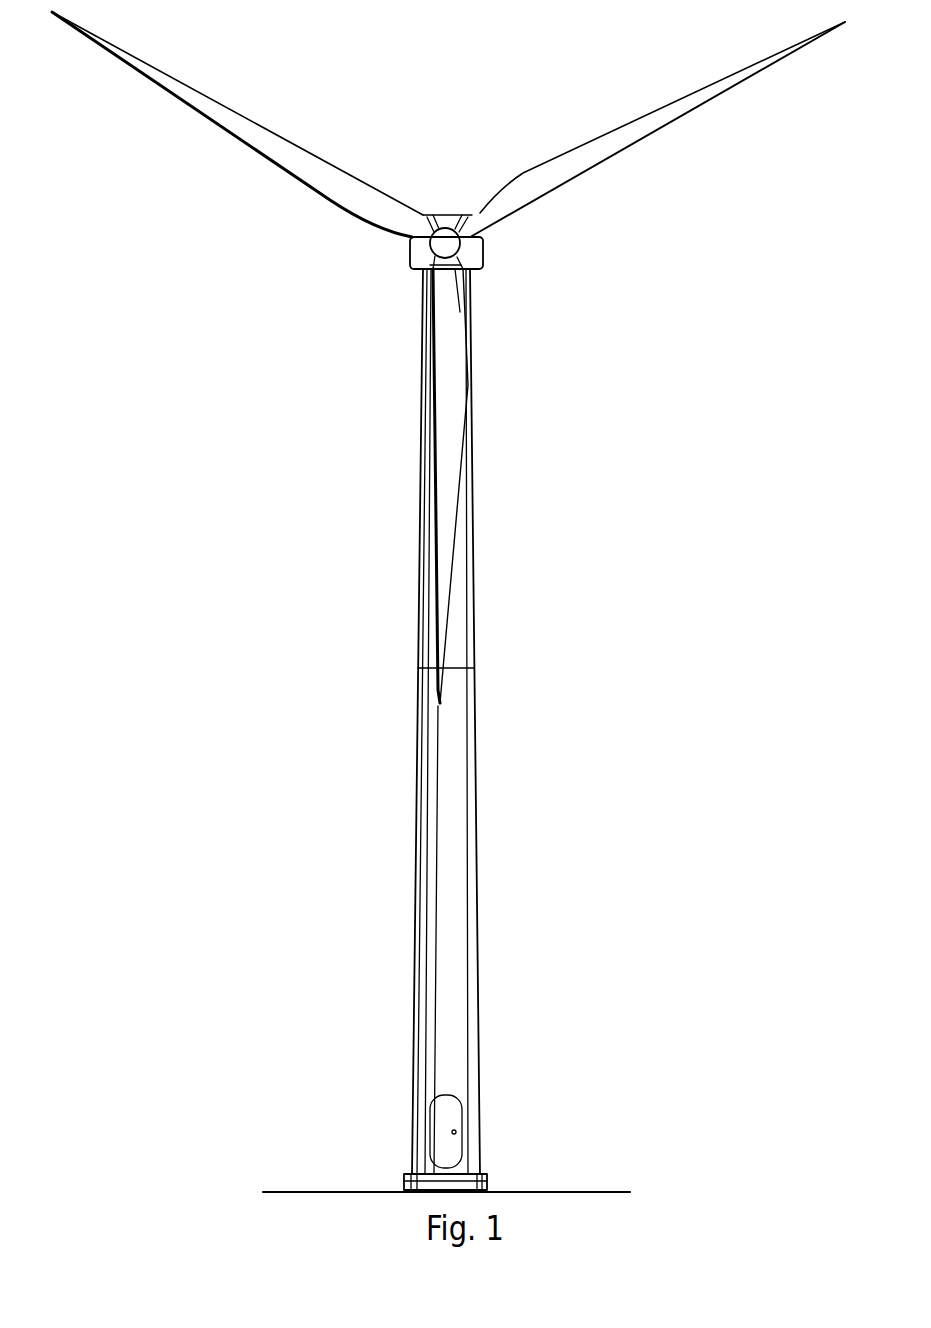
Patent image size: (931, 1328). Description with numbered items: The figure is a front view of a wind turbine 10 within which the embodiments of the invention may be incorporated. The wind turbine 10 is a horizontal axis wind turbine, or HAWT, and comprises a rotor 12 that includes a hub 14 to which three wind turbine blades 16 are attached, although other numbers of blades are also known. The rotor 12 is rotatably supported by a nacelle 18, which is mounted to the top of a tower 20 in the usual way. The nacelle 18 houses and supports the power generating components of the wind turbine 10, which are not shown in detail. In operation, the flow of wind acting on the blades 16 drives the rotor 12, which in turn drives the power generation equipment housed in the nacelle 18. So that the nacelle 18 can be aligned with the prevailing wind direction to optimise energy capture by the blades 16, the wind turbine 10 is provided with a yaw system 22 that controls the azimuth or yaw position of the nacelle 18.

The wind turbine 10 is at (448, 602).
The rotor 12 is at (385, 258).
The hub 14 is at (457, 247).
The wind turbine blades 16 is at (302, 168).
The nacelle 18 is at (462, 215).
The tower 20 is at (457, 642).
The yaw system 22 is at (465, 280).